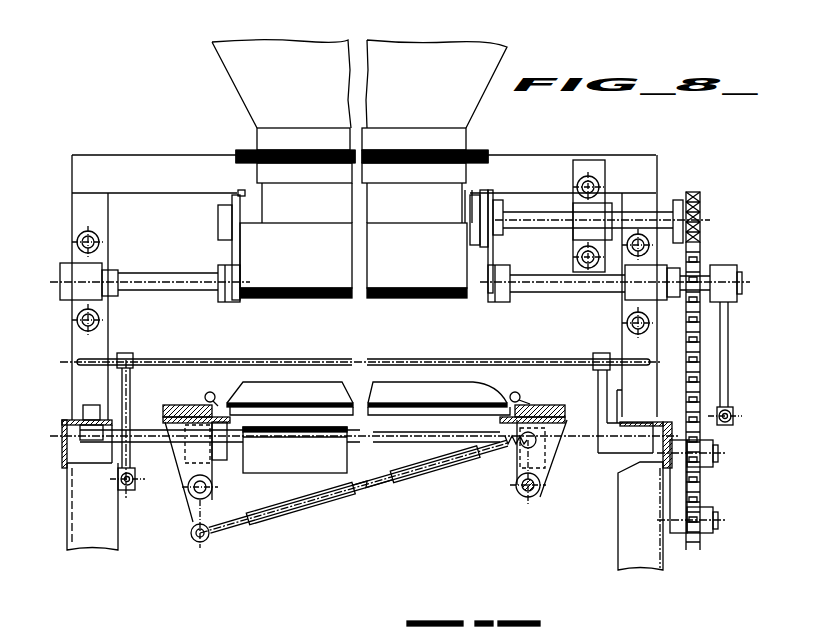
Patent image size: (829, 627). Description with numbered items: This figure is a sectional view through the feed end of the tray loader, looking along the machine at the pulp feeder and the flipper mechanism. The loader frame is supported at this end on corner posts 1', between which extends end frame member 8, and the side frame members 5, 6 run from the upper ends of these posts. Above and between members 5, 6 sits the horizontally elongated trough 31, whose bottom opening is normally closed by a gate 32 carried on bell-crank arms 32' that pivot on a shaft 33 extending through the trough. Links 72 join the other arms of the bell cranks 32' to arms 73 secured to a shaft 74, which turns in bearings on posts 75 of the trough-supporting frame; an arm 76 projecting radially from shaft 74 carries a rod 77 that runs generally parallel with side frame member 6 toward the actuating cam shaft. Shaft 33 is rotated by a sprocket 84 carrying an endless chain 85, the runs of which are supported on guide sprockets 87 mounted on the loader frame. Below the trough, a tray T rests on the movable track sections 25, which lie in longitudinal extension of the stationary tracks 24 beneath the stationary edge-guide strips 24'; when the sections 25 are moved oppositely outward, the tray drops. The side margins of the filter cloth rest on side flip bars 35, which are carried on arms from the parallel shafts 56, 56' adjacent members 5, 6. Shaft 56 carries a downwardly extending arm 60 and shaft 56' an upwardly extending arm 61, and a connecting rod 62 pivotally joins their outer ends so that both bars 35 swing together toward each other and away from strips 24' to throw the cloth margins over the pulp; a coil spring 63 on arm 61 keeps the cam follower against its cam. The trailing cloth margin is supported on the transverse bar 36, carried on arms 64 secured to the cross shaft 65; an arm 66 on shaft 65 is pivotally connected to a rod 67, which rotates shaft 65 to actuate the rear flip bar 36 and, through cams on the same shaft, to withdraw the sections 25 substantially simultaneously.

The corner posts 1' is at (350, 516).
The side frame member 5 is at (62, 450).
The side frame member 6 is at (665, 420).
The end frame member 8 is at (265, 467).
The tracks 24 is at (366, 400).
The stationary strips 24' is at (364, 397).
The track sections 25 is at (223, 462).
The trough 31 is at (245, 94).
The gate 32 is at (353, 254).
The arms 32' is at (361, 207).
The shaft 33 is at (535, 218).
The bars 35 is at (212, 392).
The transverse bar 36 is at (305, 360).
The trays T is at (430, 410).
The shaft 56 is at (186, 494).
The shaft 56' is at (518, 483).
The arm 60 is at (193, 522).
The arm 61 is at (540, 478).
The connecting rod 62 is at (308, 498).
The coil spring 63 is at (500, 455).
The arms 64 is at (128, 356).
The cross shaft 65 is at (393, 443).
The arm 66 is at (132, 460).
The rod 67 is at (130, 493).
The links 72 is at (240, 257).
The arms 73 is at (222, 300).
The shaft 74 is at (547, 288).
The posts 75 is at (72, 342).
The arm 76 is at (728, 335).
The rod 77 is at (735, 412).
The sprocket 84 is at (700, 205).
The endless chain 85 is at (700, 252).
The guide sprockets 87 is at (695, 500).